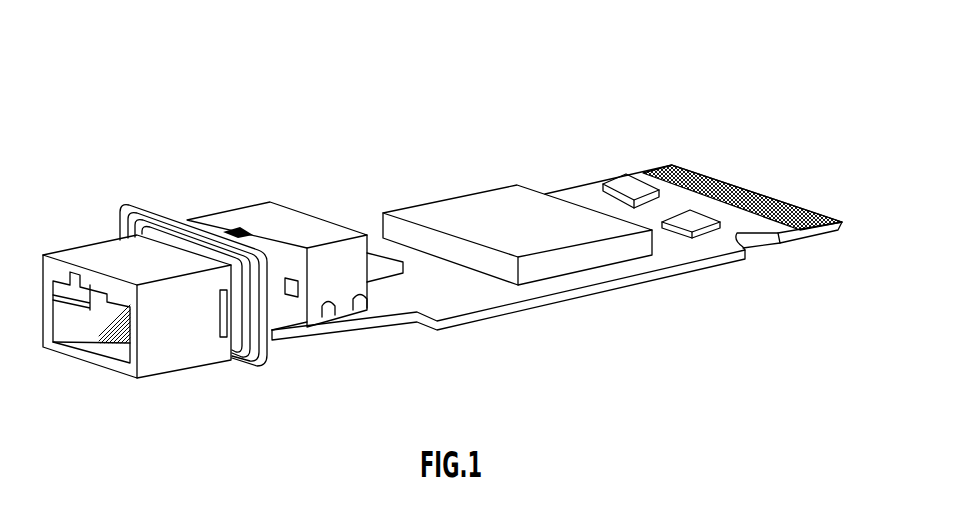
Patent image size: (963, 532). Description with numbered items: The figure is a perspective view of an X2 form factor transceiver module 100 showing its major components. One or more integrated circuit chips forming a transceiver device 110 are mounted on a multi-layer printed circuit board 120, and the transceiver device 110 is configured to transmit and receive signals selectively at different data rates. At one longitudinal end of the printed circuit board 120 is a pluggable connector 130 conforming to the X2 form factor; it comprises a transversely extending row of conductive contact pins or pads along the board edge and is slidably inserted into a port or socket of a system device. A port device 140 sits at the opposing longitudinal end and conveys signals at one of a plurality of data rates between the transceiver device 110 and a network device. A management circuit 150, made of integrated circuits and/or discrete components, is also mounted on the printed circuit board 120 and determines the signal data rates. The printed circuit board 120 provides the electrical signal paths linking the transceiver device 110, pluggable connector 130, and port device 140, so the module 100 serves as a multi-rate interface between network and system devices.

The X2 form factor transceiver module 100 is at (430, 68).
The transceiver device 110 is at (508, 210).
The printed circuit board 120 is at (493, 314).
The pluggable connector 130 is at (737, 188).
The port device 140 is at (108, 258).
The management circuit 150 is at (623, 170).